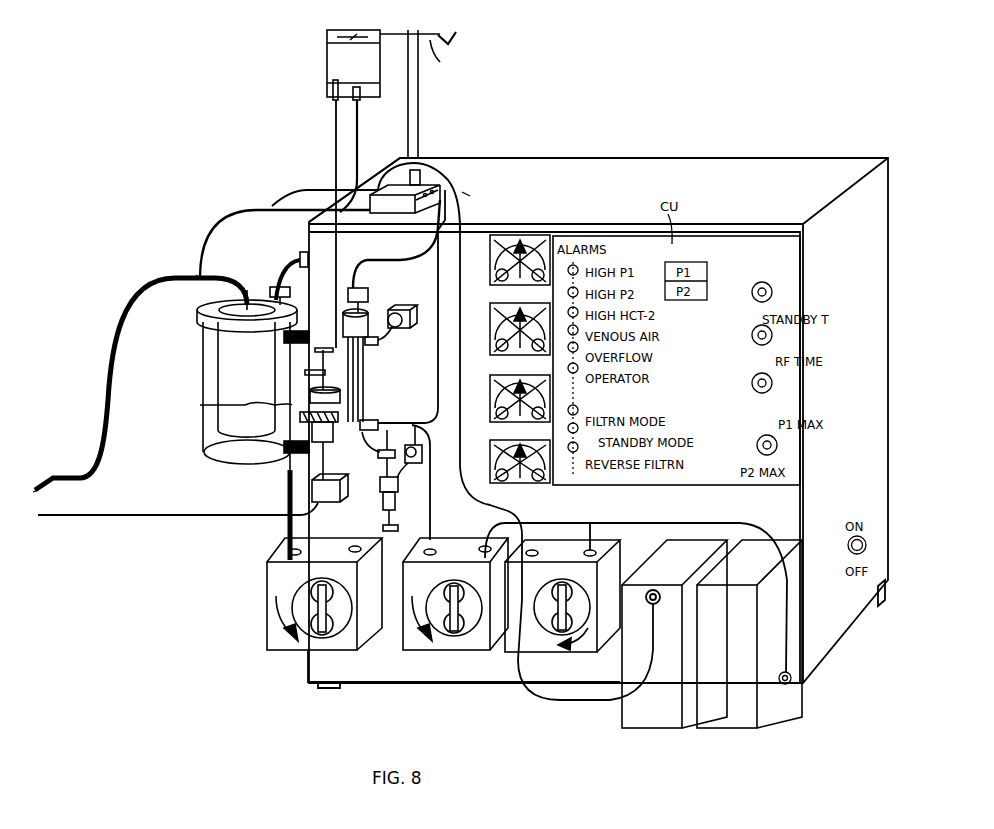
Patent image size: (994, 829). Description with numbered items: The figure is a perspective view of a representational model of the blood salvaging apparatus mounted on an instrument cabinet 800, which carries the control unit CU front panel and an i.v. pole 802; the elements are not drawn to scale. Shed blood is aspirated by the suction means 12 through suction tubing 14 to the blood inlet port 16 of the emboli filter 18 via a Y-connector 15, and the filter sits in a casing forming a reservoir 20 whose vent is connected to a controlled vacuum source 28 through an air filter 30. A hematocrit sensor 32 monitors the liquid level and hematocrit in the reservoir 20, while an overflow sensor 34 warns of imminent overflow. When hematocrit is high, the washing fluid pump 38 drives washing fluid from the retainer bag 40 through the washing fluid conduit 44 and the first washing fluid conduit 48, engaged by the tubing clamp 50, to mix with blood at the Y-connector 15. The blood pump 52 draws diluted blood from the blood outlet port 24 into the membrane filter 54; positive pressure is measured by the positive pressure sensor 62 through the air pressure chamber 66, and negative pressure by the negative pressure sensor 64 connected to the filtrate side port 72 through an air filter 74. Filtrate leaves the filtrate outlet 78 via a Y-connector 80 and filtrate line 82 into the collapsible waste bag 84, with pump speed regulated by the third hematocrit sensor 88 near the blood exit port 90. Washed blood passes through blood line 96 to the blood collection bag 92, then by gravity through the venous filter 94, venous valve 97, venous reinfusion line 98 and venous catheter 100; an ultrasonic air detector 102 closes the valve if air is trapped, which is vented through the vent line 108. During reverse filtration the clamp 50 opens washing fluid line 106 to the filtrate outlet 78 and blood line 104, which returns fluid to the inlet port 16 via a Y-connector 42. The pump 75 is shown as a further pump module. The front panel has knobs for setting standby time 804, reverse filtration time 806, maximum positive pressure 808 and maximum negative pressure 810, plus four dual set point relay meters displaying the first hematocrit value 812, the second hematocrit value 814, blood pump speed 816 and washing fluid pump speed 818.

The suction means 12 is at (70, 474).
The suction tubing 14 is at (146, 296).
The Y-connector 15 is at (192, 268).
The blood inlet port 16 is at (250, 298).
The emboli filter 18 is at (210, 356).
The reservoir 20 is at (208, 335).
The blood outlet port 24 is at (282, 468).
The controlled vacuum source 28 is at (300, 252).
The air filter 30 is at (279, 286).
The hematocrit sensor 32 is at (280, 459).
The overflow sensor 34 is at (220, 369).
The washing fluid pump 38 is at (580, 654).
The retainer bag 40 is at (722, 728).
The Y-connector 42 is at (270, 202).
The washing fluid conduit 44 is at (456, 478).
The first washing fluid conduit 48 is at (321, 189).
The tubing clamp 50 is at (387, 214).
The blood pump 52 is at (266, 634).
The membrane filter 54 is at (365, 402).
The positive pressure sensor 62 is at (418, 478).
The negative pressure sensor 64 is at (404, 309).
The air pressure chamber 66 is at (396, 526).
The filtrate side port 72 is at (375, 348).
The air filter 74 is at (397, 335).
The pump 75 is at (418, 652).
The filtrate outlet 78 is at (378, 418).
The Y-connector 80 is at (414, 419).
The filtrate line 82 is at (438, 512).
The collapsible waste bag 84 is at (640, 724).
The third hematocrit sensor 88 is at (370, 283).
The blood exit port 90 is at (362, 320).
The blood collection bag 92 is at (326, 62).
The venous filter 94 is at (328, 492).
The blood line 96 is at (357, 149).
The venous valve 97 is at (330, 503).
The venous reinfusion line 98 is at (117, 527).
The venous catheter 100 is at (52, 527).
The ultrasonic air detector 102 is at (226, 405).
The blood line 104 is at (227, 210).
The washing fluid line 106 is at (468, 200).
The vent line 108 is at (320, 344).
The instrument cabinet 800 is at (696, 159).
The i.v. pole 802 is at (444, 60).
The standby time knob 804 is at (773, 290).
The reverse filtration time knob 806 is at (773, 333).
The maximum positive pressure knob 808 is at (773, 381).
The maximum negative pressure knob 810 is at (778, 443).
The HCT-1 dual set point relay meter 812 is at (486, 274).
The HCT-2 dual set point relay meter 814 is at (486, 332).
The blood pump speed meter 816 is at (486, 394).
The washing fluid pump speed meter 818 is at (492, 468).